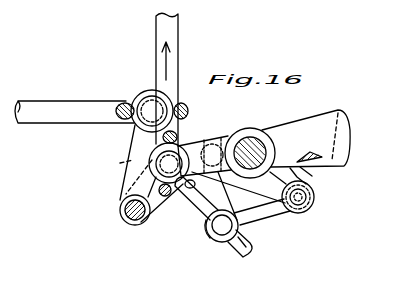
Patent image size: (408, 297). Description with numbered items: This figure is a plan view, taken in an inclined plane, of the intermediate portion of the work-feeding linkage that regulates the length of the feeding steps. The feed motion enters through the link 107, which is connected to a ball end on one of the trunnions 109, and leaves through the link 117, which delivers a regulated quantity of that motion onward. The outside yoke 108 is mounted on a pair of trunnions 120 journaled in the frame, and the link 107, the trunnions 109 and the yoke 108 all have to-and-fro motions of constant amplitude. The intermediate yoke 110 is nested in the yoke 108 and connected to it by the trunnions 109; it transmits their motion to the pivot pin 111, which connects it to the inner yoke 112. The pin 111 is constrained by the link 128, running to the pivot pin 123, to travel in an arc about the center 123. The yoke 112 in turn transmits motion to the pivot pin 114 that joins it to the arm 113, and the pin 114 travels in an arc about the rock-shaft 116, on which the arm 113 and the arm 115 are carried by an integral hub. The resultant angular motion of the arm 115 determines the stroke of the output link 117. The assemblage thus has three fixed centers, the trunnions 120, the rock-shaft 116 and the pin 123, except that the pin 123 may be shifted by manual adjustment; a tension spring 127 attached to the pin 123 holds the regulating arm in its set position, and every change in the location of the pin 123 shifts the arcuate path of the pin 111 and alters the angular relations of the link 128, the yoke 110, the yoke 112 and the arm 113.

The link 107 is at (163, 33).
The yoke 108 is at (338, 115).
The trunnions 109 is at (149, 158).
The yoke 110 is at (235, 255).
The pivot pin 111 is at (221, 227).
The yoke 112 is at (220, 199).
The arm 113 is at (163, 214).
The pivot pin 114 is at (212, 133).
The arm 115 is at (133, 172).
The rock-shaft 116 is at (125, 211).
The link 117 is at (43, 107).
The trunnions 120 is at (250, 150).
The pivot pin 123 is at (314, 207).
The tension spring 127 is at (294, 170).
The link 128 is at (269, 210).